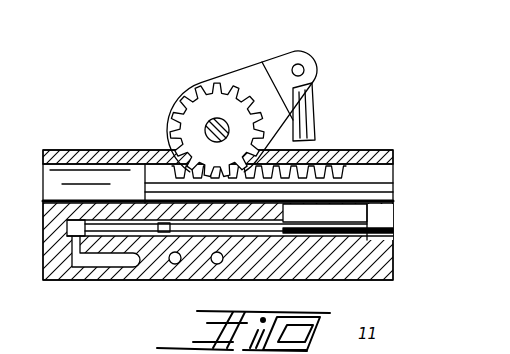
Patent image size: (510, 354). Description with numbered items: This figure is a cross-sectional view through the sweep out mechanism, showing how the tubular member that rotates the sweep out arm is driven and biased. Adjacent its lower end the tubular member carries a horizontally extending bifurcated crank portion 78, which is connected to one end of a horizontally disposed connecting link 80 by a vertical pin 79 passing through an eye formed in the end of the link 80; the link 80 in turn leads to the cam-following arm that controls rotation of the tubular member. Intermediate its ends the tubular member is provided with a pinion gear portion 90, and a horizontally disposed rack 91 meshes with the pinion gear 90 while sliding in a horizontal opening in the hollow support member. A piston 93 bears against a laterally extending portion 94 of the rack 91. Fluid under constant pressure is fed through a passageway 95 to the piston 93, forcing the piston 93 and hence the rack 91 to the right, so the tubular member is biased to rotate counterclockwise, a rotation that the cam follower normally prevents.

The bifurcated crank portion 78 is at (240, 78).
The vertical pin 79 is at (298, 70).
The connecting link 80 is at (313, 118).
The pinion gear portion 90 is at (183, 102).
The rack 91 is at (377, 185).
The piston 93 is at (210, 228).
The laterally extending portion 94 is at (380, 222).
The passageway 95 is at (107, 258).